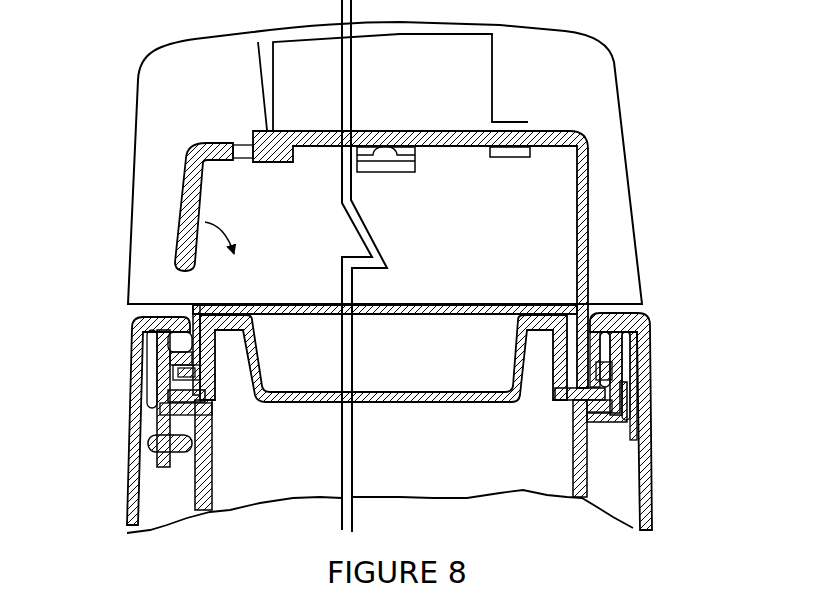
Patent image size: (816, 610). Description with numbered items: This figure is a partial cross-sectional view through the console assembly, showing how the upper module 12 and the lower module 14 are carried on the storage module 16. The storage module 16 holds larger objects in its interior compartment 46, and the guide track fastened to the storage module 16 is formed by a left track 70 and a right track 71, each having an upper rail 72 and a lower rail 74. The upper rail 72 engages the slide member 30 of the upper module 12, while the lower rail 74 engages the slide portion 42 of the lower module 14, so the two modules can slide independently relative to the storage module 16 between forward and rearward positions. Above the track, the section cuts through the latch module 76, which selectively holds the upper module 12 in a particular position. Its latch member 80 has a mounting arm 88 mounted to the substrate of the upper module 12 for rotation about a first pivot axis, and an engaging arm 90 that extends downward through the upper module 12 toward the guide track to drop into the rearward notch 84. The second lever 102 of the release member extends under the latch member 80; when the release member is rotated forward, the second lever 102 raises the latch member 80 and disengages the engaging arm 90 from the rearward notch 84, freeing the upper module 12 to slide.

The upper module 12 is at (634, 154).
The lower module 14 is at (425, 406).
The storage module 16 is at (656, 484).
The slide member 30 is at (165, 363).
The slide portion 42 is at (158, 394).
The interior compartment 46 is at (214, 492).
The left track 70 is at (149, 446).
The right track 71 is at (620, 362).
The upper rail 72 is at (207, 358).
The lower rail 74 is at (205, 405).
The latch module 76 is at (172, 182).
The latch member 80 is at (200, 207).
The rearward notch 84 is at (573, 406).
The mounting arm 88 is at (177, 238).
The engaging arm 90 is at (587, 215).
The second lever 102 is at (389, 171).